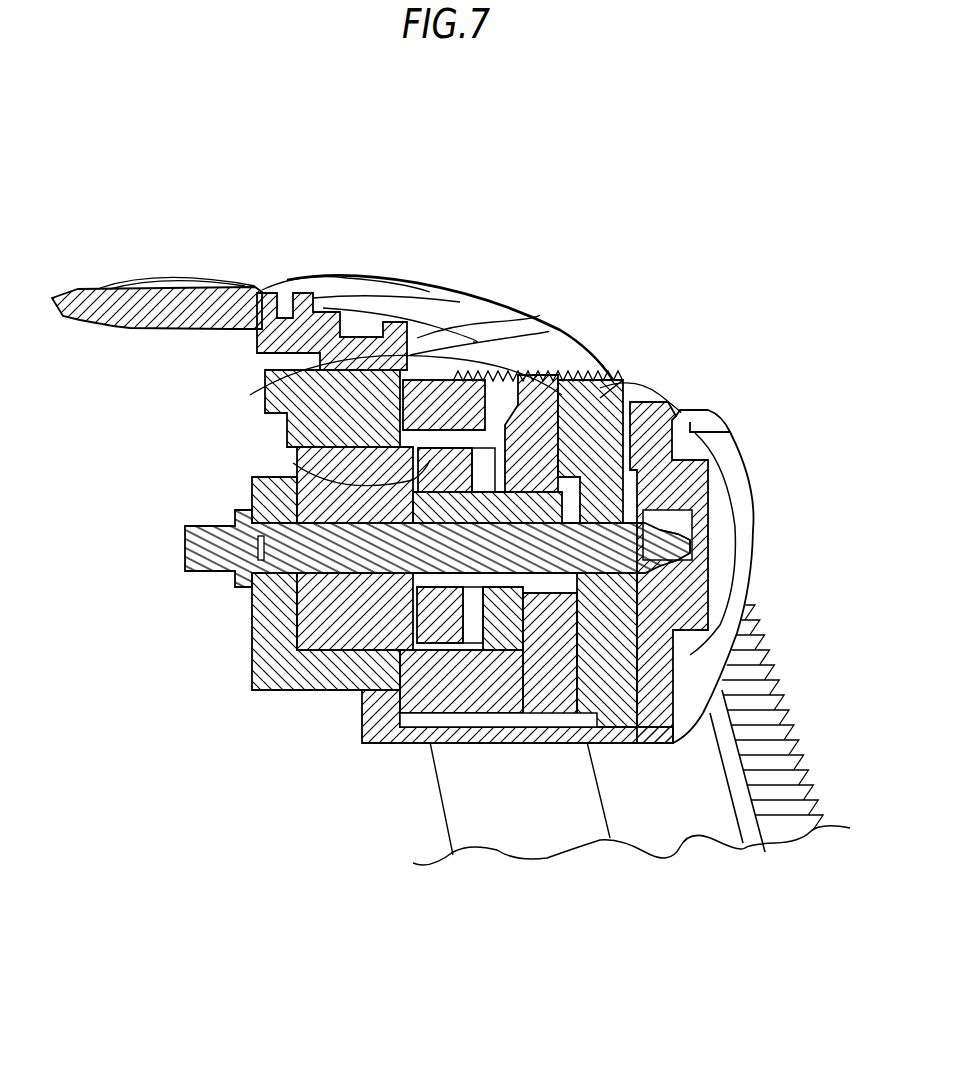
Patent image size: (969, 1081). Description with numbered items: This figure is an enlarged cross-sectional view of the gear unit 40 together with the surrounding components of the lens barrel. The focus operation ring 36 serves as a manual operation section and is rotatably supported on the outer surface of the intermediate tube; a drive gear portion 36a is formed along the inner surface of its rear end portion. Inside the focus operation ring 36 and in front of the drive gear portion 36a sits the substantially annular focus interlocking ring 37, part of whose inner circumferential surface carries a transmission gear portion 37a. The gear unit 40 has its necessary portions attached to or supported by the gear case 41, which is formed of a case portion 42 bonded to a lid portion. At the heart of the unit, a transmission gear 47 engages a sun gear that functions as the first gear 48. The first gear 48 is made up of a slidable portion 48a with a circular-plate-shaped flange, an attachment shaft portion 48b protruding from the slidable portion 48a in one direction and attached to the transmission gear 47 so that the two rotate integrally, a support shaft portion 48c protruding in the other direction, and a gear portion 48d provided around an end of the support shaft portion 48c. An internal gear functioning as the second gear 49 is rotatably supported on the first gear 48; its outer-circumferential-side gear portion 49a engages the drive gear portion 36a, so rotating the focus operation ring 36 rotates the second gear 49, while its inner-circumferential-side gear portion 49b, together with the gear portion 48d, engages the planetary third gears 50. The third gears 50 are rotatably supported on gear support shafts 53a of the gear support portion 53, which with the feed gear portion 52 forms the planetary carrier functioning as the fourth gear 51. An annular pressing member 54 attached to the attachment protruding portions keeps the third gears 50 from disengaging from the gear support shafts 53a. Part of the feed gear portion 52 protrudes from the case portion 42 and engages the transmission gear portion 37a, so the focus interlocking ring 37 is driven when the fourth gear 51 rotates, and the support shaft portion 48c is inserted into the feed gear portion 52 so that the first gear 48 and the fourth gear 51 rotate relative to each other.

The focus operation ring 36 is at (100, 290).
The drive gear portion 36a is at (770, 728).
The focus interlocking ring 37 is at (290, 397).
The transmission gear portion 37a is at (293, 463).
The gear unit 40 is at (267, 690).
The gear case 41 is at (723, 517).
The case portion 42 is at (297, 692).
The transmission gear 47 is at (624, 378).
The first gear 48 is at (683, 532).
The slidable portion 48a is at (605, 398).
The attachment shaft portion 48b is at (680, 553).
The support shaft portion 48c is at (275, 556).
The gear portion 48d is at (452, 742).
The second gear 49 is at (440, 425).
The outer-circumferential-side gear portion 49a is at (417, 430).
The inner-circumferential-side gear portion 49b is at (262, 483).
The third gear 50 is at (445, 420).
The fourth gear 51 is at (317, 623).
The feed gear portion 52 is at (300, 440).
The gear support portion 53 is at (430, 650).
The gear support shaft 53a is at (482, 412).
The pressing member 54 is at (550, 397).